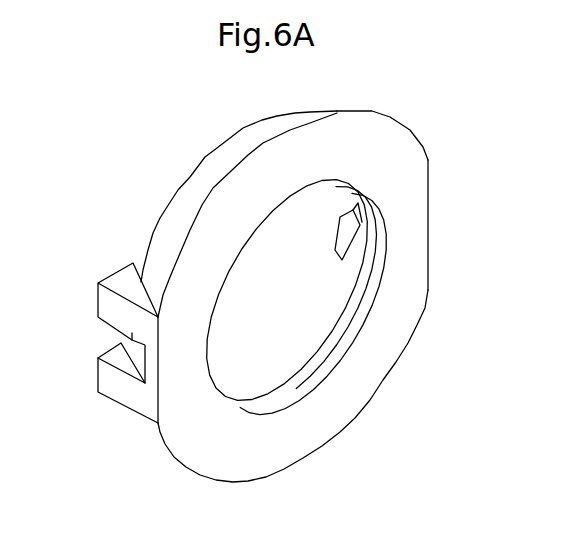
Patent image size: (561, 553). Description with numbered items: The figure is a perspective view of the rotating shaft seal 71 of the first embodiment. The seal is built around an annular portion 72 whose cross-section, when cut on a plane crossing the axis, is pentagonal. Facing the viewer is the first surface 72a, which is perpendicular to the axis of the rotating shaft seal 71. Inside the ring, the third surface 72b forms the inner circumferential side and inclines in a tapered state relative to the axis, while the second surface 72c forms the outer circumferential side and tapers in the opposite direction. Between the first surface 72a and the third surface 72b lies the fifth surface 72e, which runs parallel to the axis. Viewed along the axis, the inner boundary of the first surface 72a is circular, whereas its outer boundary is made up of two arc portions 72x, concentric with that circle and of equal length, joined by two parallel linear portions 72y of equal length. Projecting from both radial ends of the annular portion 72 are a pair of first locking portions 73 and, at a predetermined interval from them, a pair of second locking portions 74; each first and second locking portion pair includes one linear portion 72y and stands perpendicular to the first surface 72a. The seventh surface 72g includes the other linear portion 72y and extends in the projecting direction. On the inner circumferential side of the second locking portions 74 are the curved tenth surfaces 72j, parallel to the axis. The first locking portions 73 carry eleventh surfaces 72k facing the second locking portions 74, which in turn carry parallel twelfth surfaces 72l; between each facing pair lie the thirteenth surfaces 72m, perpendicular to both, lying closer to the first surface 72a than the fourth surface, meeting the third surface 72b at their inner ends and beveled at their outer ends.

The rotating shaft seal 71 is at (158, 130).
The annular portion 72 is at (431, 198).
The first surface 72a is at (410, 300).
The third surface 72b is at (318, 345).
The second surface 72c is at (207, 177).
The fifth surface 72e is at (347, 332).
The seventh surface 72g is at (122, 388).
The tenth surfaces 72j is at (338, 252).
The eleventh surfaces 72k is at (99, 328).
The twelfth surfaces 72l is at (116, 353).
The thirteenth surfaces 72m is at (128, 341).
The arc portions 72x is at (390, 115).
The linear portions 72y is at (428, 227).
The first locking portions 73 is at (112, 265).
The second locking portions 74 is at (335, 262).